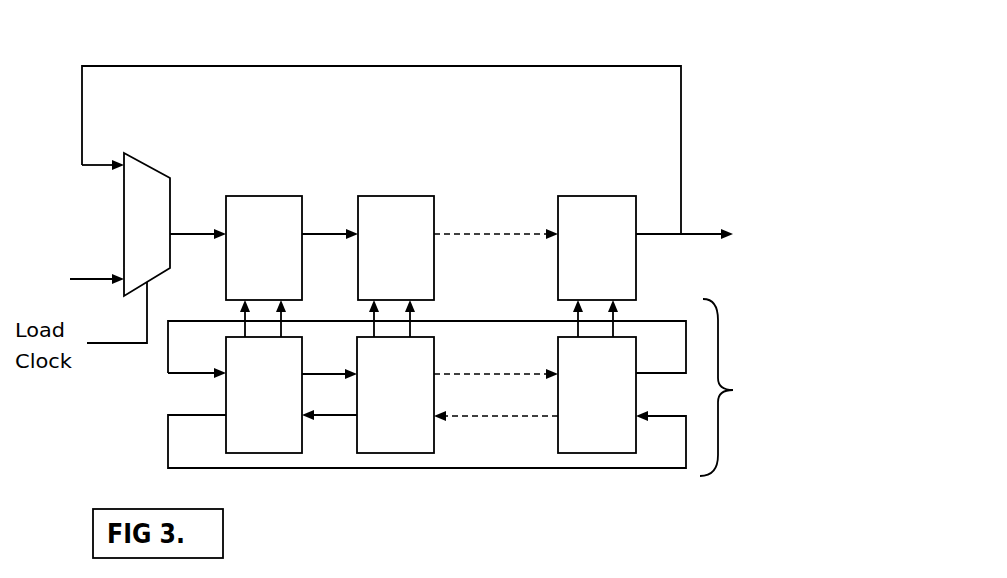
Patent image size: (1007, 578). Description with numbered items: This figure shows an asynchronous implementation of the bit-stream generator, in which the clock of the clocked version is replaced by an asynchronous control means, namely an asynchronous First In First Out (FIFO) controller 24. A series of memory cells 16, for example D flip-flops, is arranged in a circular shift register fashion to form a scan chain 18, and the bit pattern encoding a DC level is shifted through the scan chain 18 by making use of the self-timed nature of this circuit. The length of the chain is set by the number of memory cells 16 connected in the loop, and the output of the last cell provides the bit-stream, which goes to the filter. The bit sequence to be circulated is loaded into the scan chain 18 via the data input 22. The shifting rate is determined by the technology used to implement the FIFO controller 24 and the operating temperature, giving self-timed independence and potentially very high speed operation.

The scan chain 18 is at (208, 50).
The memory cells 16 is at (640, 185).
The data input 22 is at (36, 268).
The asynchronous First In First Out (FIFO) controller 24 is at (148, 428).